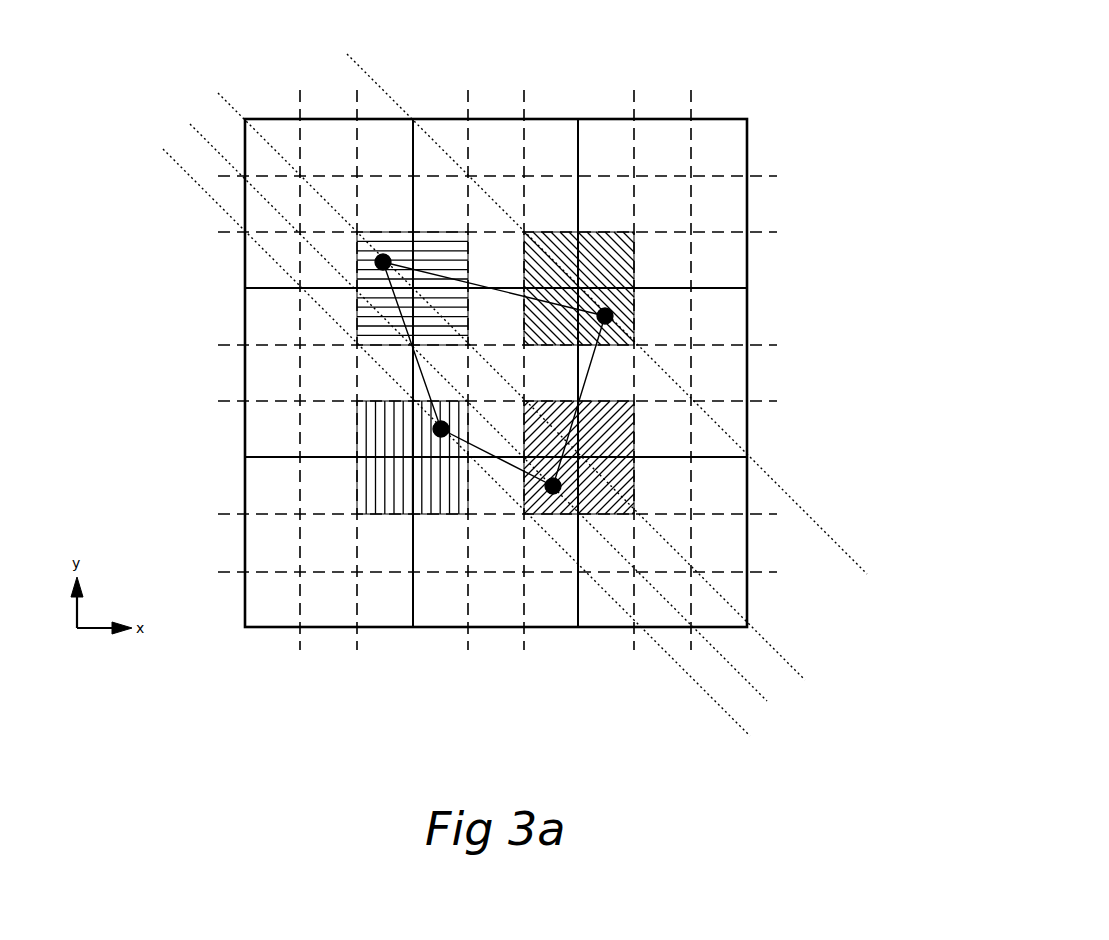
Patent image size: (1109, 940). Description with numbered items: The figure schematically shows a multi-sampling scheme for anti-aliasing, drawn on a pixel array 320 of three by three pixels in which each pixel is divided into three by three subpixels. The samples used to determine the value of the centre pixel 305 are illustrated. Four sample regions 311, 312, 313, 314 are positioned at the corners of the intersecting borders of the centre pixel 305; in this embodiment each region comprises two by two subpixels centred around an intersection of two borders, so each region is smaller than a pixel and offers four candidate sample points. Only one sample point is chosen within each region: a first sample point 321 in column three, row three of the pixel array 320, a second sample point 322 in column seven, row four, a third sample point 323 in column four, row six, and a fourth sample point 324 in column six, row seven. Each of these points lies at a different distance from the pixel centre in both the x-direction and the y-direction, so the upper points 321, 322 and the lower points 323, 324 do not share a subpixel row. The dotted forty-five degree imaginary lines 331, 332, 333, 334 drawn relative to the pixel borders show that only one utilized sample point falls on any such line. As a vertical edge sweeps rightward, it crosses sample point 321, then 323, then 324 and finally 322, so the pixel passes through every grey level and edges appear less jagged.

The centre pixel 305 is at (413, 373).
The sample region 311 is at (363, 270).
The sample region 312 is at (607, 257).
The sample region 313 is at (377, 438).
The sample region 314 is at (607, 429).
The pixel array 320 is at (747, 132).
The first sample point 321 is at (388, 255).
The second sample point 322 is at (612, 316).
The third sample point 323 is at (434, 432).
The fourth sample point 324 is at (553, 493).
The 45 degree imaginary line 331 is at (768, 643).
The 45 degree imaginary line 332 is at (830, 537).
The 45 degree imaginary line 333 is at (730, 717).
The 45 degree imaginary line 334 is at (750, 687).